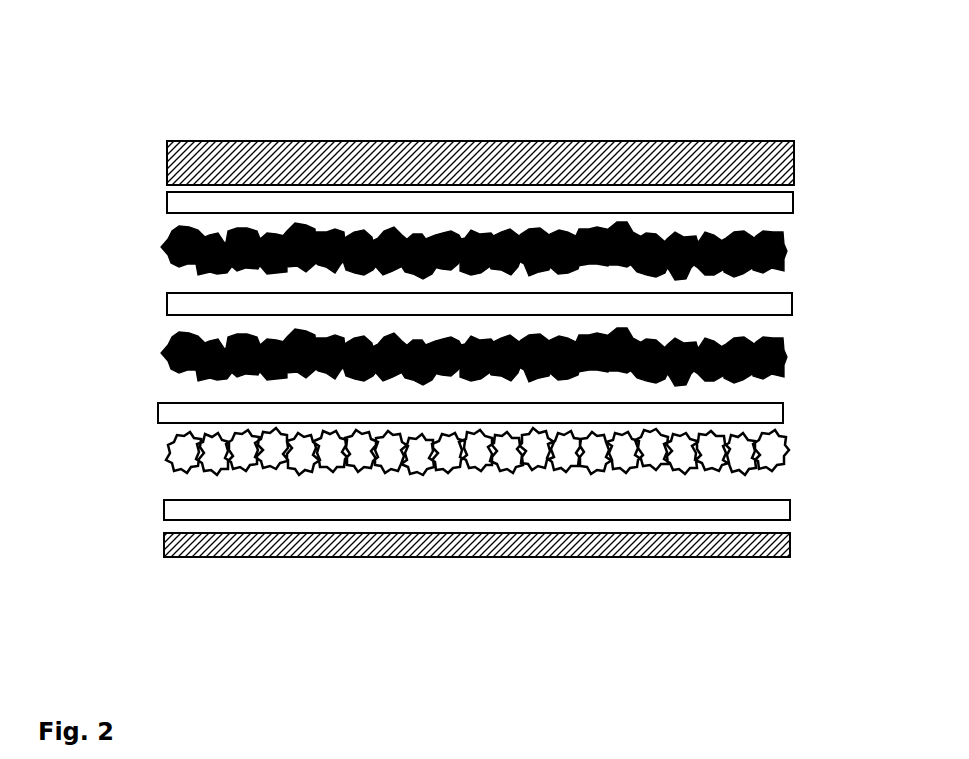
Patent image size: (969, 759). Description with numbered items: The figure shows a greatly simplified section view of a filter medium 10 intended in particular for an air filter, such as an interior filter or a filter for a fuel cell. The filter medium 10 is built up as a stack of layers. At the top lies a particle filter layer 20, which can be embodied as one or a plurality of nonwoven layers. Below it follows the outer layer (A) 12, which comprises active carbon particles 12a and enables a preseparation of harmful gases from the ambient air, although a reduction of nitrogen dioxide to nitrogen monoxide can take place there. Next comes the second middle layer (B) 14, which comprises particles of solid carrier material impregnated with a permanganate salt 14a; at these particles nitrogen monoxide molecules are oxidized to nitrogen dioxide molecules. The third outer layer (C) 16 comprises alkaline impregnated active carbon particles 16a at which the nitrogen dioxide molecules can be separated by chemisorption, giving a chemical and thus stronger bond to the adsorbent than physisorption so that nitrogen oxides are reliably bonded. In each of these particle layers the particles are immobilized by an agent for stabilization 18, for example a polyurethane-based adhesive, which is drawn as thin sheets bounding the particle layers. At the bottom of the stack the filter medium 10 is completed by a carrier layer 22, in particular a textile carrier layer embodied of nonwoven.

The filter medium 10 is at (516, 100).
The outer layer (A) 12 is at (160, 255).
The active carbon particles 12a is at (785, 240).
The second middle layer (B) 14 is at (160, 358).
The particles of solid carrier material impregnated with a permanganate salt 14a is at (780, 356).
The third outer layer (C) 16 is at (160, 462).
The alkaline impregnated active carbon particles 16a is at (787, 458).
The agent for stabilization 18 is at (167, 195).
The particle filter layer 20 is at (230, 140).
The carrier layer 22 is at (228, 558).